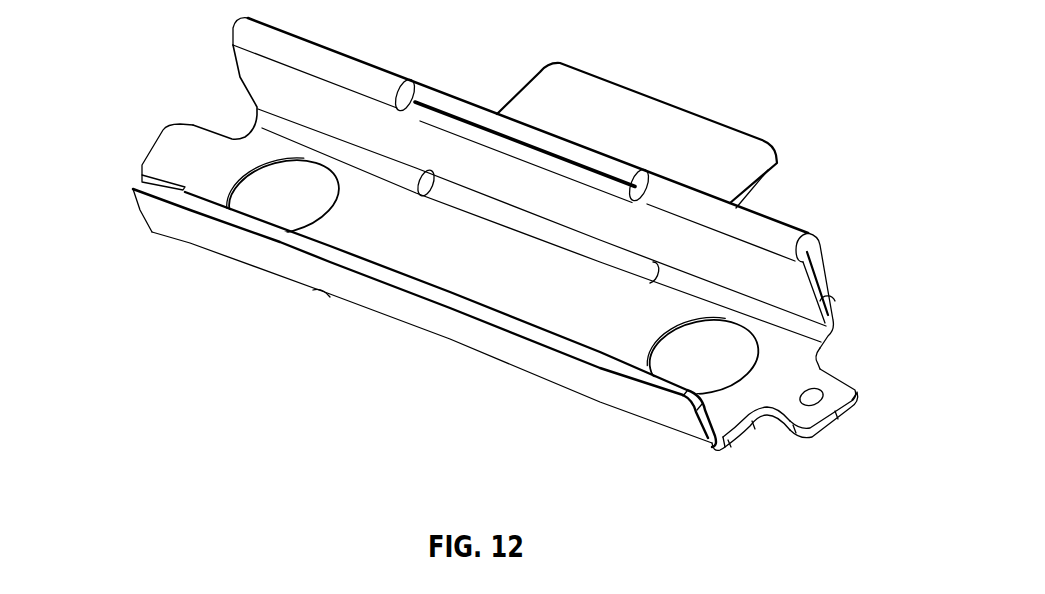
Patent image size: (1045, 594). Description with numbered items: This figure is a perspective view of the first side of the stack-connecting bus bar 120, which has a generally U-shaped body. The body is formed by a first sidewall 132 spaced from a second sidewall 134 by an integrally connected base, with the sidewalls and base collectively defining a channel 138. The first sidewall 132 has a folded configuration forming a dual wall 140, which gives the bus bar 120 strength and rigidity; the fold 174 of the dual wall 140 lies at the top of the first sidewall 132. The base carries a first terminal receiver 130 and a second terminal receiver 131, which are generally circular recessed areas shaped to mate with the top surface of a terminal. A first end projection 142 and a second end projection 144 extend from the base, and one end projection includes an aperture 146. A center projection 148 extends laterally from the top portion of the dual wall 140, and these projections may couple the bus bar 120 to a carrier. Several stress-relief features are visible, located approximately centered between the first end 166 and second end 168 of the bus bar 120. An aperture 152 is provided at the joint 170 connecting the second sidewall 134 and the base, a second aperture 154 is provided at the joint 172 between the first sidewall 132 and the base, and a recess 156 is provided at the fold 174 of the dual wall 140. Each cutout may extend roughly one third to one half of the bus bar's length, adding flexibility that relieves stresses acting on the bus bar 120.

The stack-connecting bus bar 120 is at (812, 112).
The first terminal receiver 130 is at (715, 348).
The second terminal receiver 131 is at (283, 182).
The first sidewall 132 is at (390, 67).
The second sidewall 134 is at (485, 343).
The channel 138 is at (530, 272).
The dual wall 140 is at (836, 300).
The first end projection 142 is at (855, 394).
The second end projection 144 is at (155, 158).
The aperture 146 is at (807, 402).
The center projection 148 is at (718, 138).
The aperture 152 is at (400, 323).
The second aperture 154 is at (453, 193).
The recess 156 is at (543, 137).
The first end 166 is at (833, 333).
The second end 168 is at (240, 77).
The joint 170 is at (717, 453).
The joint 172 is at (298, 138).
The fold 174 is at (785, 238).